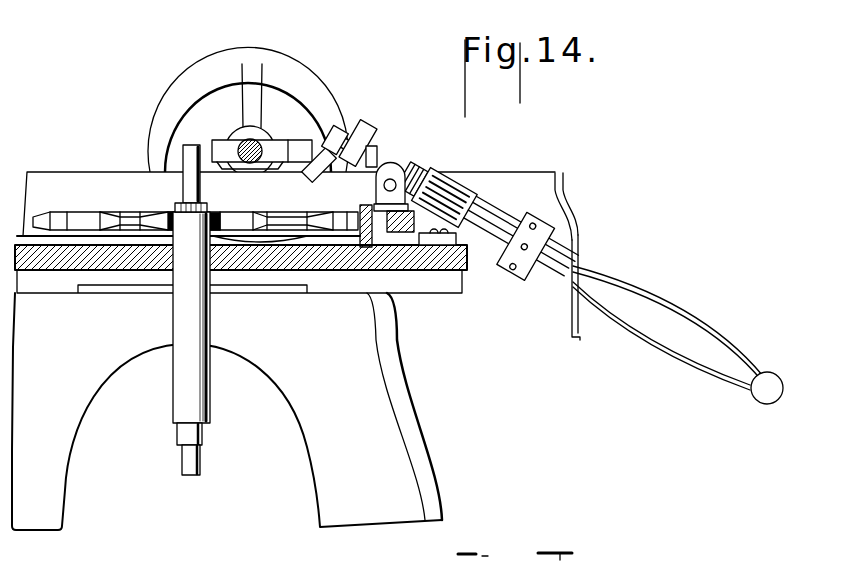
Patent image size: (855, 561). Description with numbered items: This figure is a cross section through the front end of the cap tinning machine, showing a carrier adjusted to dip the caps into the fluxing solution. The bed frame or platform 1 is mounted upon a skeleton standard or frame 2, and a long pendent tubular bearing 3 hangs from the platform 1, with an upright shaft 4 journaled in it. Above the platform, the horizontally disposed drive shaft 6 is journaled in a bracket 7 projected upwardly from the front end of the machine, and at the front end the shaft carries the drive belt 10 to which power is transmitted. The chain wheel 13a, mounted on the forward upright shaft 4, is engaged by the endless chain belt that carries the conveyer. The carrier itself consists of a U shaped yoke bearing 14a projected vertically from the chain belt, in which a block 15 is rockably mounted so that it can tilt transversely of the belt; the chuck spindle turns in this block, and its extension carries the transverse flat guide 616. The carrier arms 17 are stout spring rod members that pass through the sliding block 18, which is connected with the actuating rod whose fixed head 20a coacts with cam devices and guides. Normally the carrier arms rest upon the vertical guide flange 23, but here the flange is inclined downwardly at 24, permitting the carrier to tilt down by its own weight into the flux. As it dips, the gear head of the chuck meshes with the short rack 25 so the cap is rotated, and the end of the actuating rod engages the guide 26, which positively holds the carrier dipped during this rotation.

The bed frame or platform 1 is at (367, 255).
The skeleton standard or frame 2 is at (227, 411).
The pendent tubular bearing 3 is at (213, 388).
The upright shaft 4 is at (190, 147).
The drive shaft 6 is at (258, 145).
The bracket 7 is at (255, 130).
The drive belt 10 is at (222, 57).
The chain wheel 13a is at (88, 218).
The U shaped yoke bearing 14a is at (392, 170).
The block 15 is at (418, 163).
The flat guide 616 is at (370, 130).
The fixed head 20a is at (341, 122).
The guide 26 is at (316, 174).
The vertical guide flange 23 is at (493, 180).
The inclined portion of guide flange 24 is at (577, 338).
The short rack 25 is at (458, 230).
The sliding block 18 is at (537, 232).
The carrier arm 17 is at (675, 326).